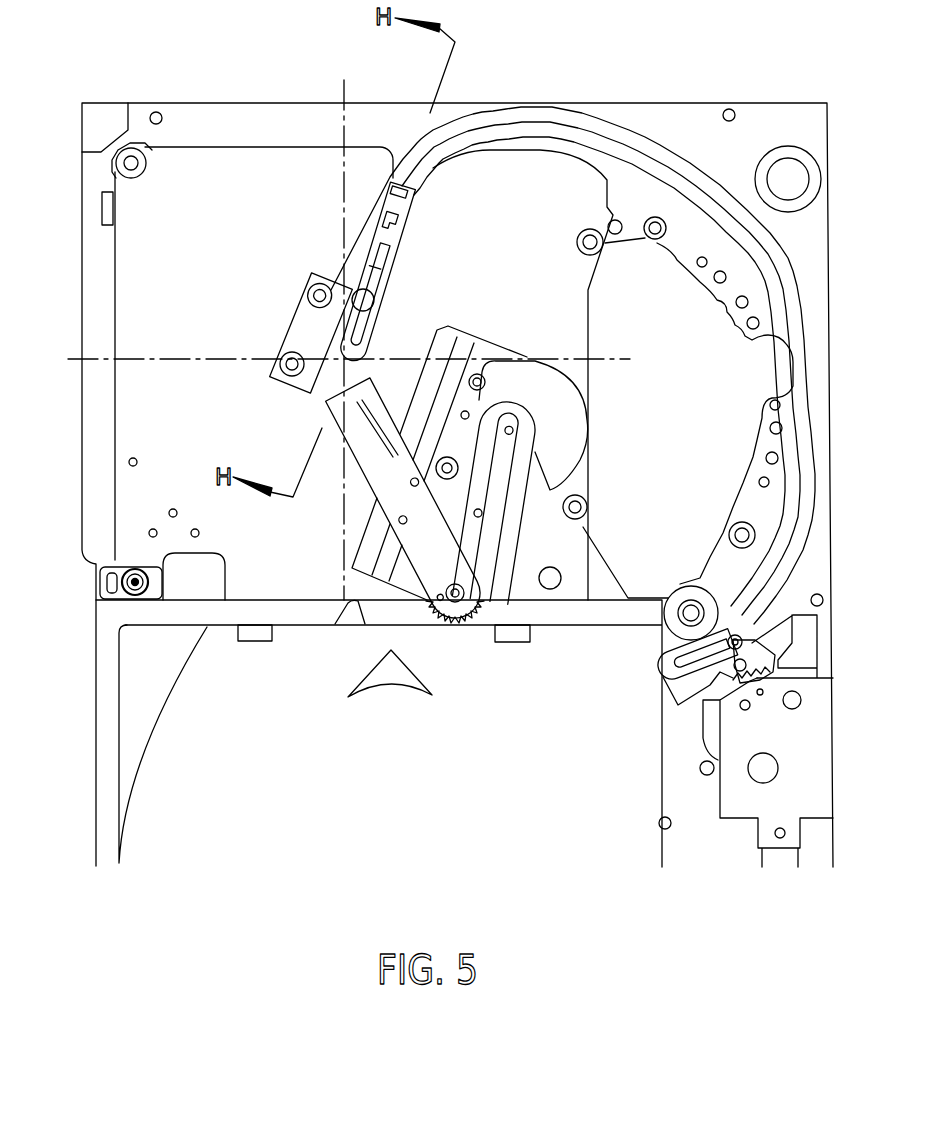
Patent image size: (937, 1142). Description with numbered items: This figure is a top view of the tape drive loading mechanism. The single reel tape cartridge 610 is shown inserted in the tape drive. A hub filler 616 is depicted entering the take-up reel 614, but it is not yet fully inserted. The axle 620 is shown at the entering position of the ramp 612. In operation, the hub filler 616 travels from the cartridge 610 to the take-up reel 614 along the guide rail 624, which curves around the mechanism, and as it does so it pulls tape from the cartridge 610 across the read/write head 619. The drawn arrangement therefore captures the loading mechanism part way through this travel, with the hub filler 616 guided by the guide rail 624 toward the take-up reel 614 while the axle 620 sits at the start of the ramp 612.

The single reel tape cartridge 610 is at (217, 733).
The ramp 612 is at (300, 333).
The take-up reel 614 is at (308, 377).
The hub filler 616 is at (380, 262).
The read/write head 619 is at (768, 368).
The axle 620 is at (374, 300).
The guide rail 624 is at (597, 142).